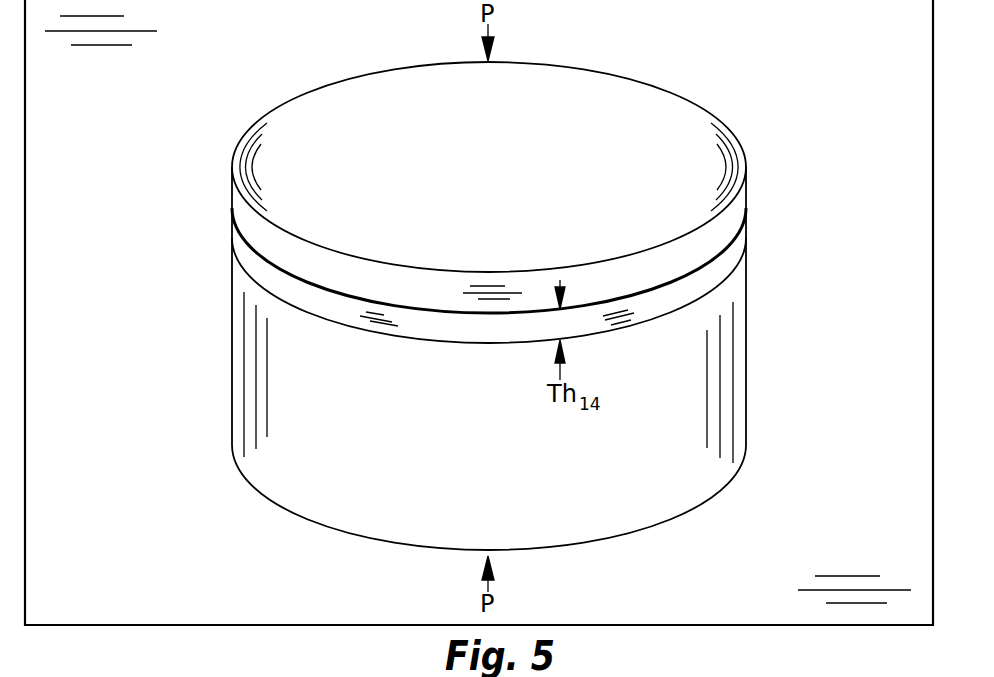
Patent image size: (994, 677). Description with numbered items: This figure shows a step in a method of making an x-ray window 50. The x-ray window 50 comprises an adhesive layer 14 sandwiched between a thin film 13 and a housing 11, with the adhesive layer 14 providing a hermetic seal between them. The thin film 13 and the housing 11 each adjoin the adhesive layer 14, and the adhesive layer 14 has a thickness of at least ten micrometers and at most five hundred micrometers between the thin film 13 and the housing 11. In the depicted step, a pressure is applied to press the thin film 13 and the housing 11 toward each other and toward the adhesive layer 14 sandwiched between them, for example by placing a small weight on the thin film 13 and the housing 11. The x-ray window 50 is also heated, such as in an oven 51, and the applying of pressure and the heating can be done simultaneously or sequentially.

The housing 11 is at (505, 450).
The thin film 13 is at (504, 176).
The adhesive layer 14 is at (742, 254).
The x-ray window 50 is at (151, 260).
The oven 51 is at (900, 27).